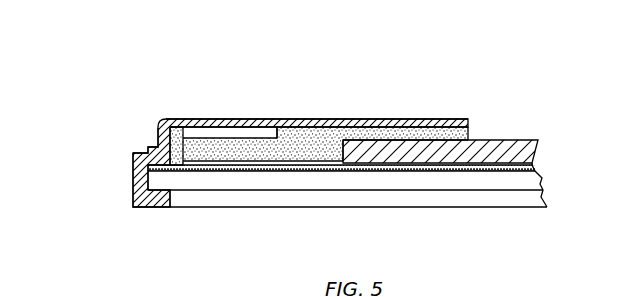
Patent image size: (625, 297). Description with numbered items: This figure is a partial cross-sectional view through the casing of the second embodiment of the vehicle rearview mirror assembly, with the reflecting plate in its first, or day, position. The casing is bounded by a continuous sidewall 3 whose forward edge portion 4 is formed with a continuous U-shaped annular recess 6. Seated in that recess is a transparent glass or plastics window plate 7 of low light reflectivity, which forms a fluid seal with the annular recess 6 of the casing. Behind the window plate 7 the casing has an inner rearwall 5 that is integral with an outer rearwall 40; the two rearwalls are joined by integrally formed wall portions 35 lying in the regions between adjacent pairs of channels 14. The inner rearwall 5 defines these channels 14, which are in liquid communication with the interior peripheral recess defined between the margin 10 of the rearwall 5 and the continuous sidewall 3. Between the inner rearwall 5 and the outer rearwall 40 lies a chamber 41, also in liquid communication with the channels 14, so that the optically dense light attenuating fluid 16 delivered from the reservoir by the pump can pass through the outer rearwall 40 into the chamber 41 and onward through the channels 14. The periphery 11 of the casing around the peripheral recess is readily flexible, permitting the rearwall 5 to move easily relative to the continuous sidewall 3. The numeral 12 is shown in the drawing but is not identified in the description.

The continuous sidewall 3 is at (133, 162).
The forward edge portion 4 is at (133, 192).
The inner rearwall 5 is at (432, 120).
The U-shaped annular recess 6 is at (133, 179).
The window plate 7 is at (222, 182).
The margin of the rearwall 10 is at (189, 136).
The periphery of the casing 11 is at (166, 118).
The adhesive layer 12 is at (283, 169).
The channels 14 is at (290, 140).
The optically dense light attenuating fluid 16 is at (355, 138).
The wall portions 35 is at (225, 133).
The outer rearwall 40 is at (318, 133).
The chamber 41 is at (385, 138).